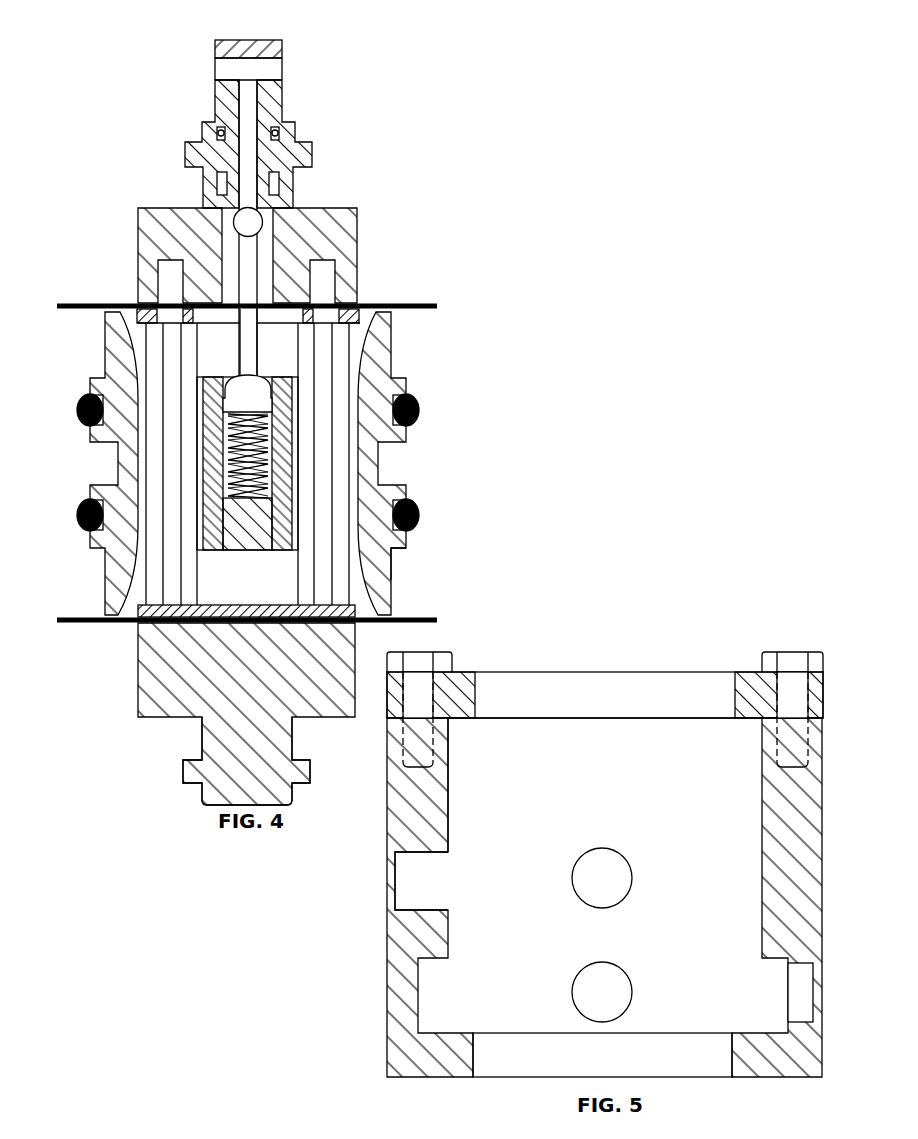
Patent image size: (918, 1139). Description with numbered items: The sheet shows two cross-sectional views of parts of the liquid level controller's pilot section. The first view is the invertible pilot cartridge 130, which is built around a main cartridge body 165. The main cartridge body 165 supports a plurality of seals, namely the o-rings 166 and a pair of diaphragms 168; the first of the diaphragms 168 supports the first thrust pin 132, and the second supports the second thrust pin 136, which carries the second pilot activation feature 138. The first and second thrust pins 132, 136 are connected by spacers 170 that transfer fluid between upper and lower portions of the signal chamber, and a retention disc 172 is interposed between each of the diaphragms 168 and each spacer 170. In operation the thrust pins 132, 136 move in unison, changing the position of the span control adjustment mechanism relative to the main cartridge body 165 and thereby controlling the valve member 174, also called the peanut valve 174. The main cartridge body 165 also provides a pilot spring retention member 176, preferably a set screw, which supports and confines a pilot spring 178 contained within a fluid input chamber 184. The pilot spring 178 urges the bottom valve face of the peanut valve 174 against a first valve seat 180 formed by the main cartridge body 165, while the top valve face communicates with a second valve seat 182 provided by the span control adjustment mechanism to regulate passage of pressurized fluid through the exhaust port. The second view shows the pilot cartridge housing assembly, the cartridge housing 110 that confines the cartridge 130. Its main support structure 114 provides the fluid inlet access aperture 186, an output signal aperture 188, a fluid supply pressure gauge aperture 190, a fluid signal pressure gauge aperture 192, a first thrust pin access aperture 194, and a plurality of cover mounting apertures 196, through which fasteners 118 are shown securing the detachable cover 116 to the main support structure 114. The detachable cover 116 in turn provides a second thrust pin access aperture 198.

In FIG. 4, the invertible pilot cartridge 130 is at (185, 73).
In FIG. 4, the first thrust pin 132 is at (350, 257).
In FIG. 4, the second thrust pin 136 is at (153, 692).
In FIG. 4, the second pilot activation feature 138 is at (168, 742).
In FIG. 4, the main cartridge body 165 is at (397, 563).
In FIG. 4, the o-rings 166 is at (420, 505).
In FIG. 4, the pair of diaphragms 168 is at (72, 313).
In FIG. 4, the spacers 170 is at (392, 583).
In FIG. 4, the retention disc 172 is at (120, 305).
In FIG. 4, the valve member 174 is at (250, 257).
In FIG. 4, the pilot spring retention member 176 is at (233, 528).
In FIG. 4, the pilot spring 178 is at (270, 446).
In FIG. 4, the first valve seat 180 is at (270, 388).
In FIG. 4, the second valve seat 182 is at (266, 212).
In FIG. 4, the fluid input chamber 184 is at (338, 540).
In FIG. 5, the cartridge housing 110 is at (700, 622).
In FIG. 5, the main support structure 114 is at (387, 1010).
In FIG. 5, the detachable cover 116 is at (737, 717).
In FIG. 5, the bolts 118 is at (448, 653).
In FIG. 5, the fluid inlet access aperture 186 is at (607, 845).
In FIG. 5, the output signal aperture 188 is at (612, 963).
In FIG. 5, the fluid supply pressure gauge aperture 190 is at (385, 882).
In FIG. 5, the fluid signal pressure gauge aperture 192 is at (780, 997).
In FIG. 5, the first thrust pin access aperture 194 is at (662, 1078).
In FIG. 5, the cover mounting apertures 196 is at (452, 767).
In FIG. 5, the second thrust pin access aperture 198 is at (583, 667).